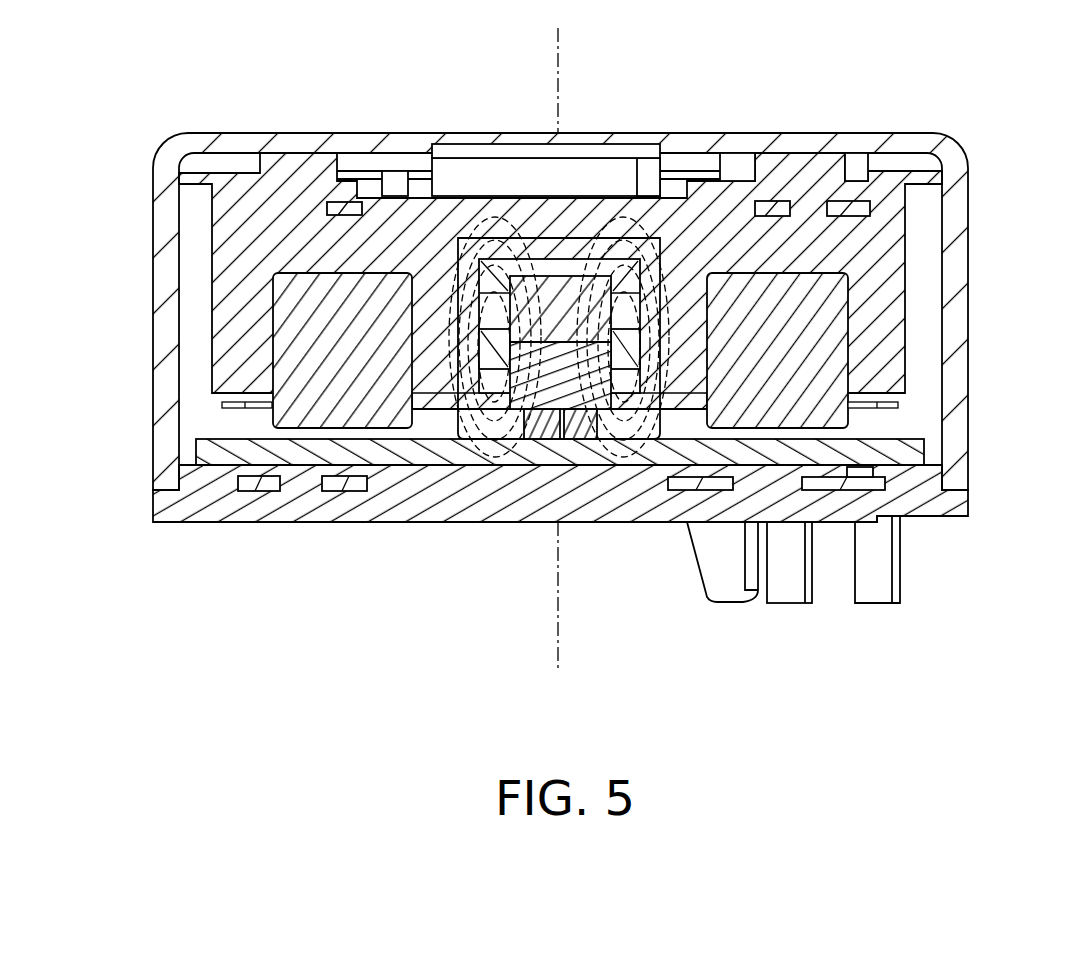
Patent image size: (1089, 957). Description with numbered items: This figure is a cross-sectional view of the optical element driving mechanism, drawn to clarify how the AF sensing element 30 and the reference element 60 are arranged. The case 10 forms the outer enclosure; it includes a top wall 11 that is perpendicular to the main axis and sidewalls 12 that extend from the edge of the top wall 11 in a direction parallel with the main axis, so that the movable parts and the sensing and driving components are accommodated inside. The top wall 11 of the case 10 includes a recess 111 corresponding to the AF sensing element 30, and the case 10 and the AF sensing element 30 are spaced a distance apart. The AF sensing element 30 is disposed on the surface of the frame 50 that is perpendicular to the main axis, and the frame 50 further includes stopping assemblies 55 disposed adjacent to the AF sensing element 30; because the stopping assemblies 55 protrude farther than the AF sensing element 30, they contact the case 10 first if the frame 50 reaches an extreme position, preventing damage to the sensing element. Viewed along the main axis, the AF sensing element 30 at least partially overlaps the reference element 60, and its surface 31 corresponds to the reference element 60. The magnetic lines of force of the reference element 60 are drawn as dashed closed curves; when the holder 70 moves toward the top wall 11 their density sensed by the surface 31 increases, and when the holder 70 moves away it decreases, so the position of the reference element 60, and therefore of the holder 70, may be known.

The case 10 is at (569, 335).
The top wall 11 is at (238, 140).
The sidewall 12 is at (160, 282).
The AF sensing element 30 is at (593, 172).
The surface 31 is at (637, 193).
The frame 50 is at (890, 257).
The stopping assembly 55 is at (297, 165).
The reference element 60 is at (592, 315).
The holder 70 is at (623, 358).
The recess 111 is at (467, 157).